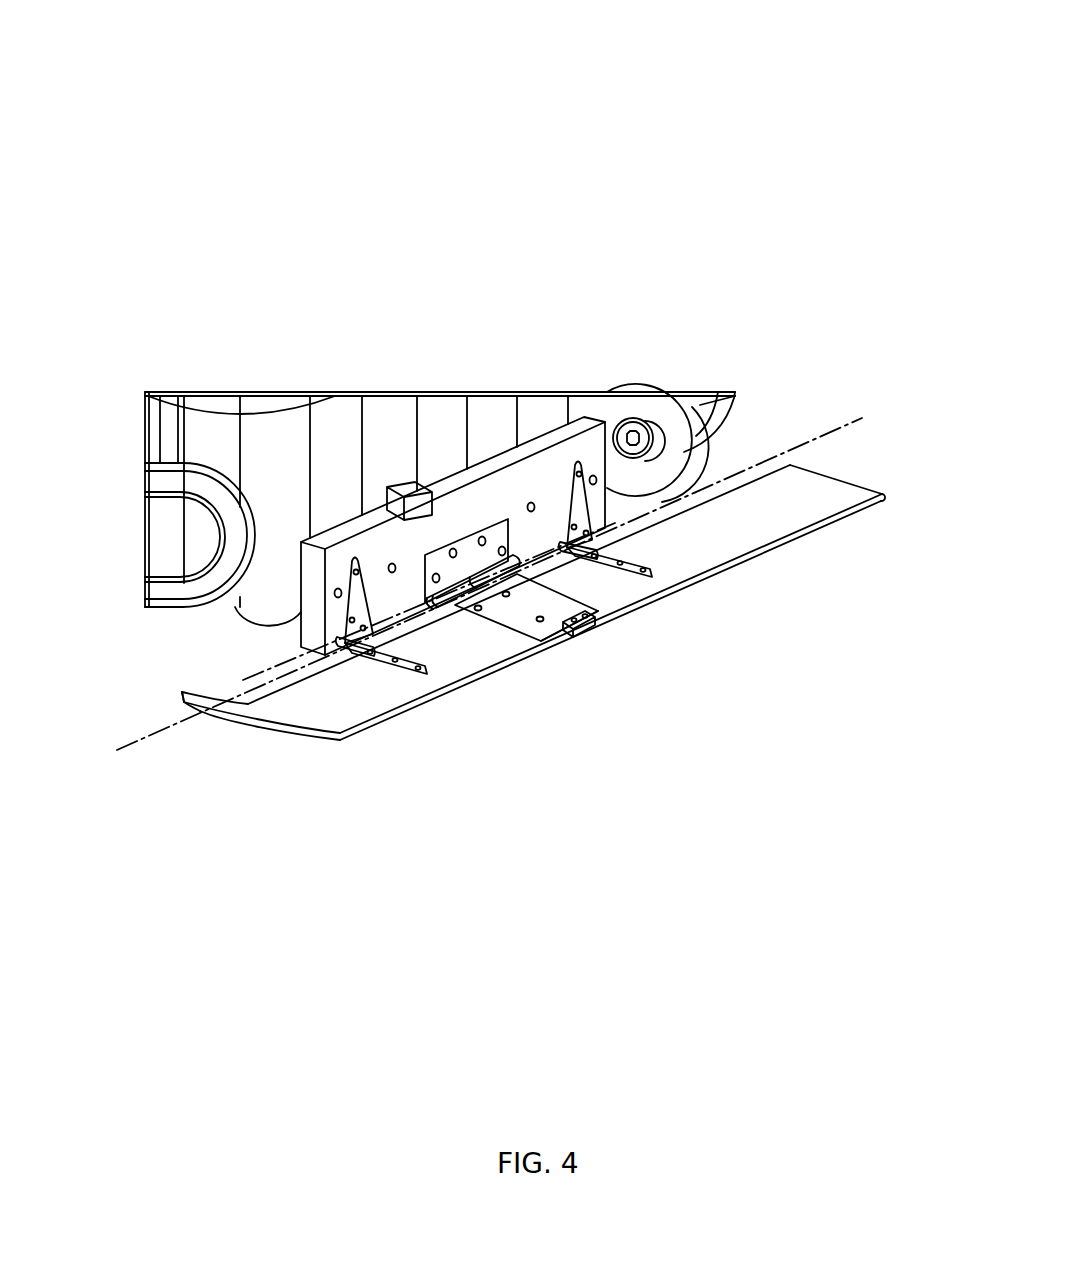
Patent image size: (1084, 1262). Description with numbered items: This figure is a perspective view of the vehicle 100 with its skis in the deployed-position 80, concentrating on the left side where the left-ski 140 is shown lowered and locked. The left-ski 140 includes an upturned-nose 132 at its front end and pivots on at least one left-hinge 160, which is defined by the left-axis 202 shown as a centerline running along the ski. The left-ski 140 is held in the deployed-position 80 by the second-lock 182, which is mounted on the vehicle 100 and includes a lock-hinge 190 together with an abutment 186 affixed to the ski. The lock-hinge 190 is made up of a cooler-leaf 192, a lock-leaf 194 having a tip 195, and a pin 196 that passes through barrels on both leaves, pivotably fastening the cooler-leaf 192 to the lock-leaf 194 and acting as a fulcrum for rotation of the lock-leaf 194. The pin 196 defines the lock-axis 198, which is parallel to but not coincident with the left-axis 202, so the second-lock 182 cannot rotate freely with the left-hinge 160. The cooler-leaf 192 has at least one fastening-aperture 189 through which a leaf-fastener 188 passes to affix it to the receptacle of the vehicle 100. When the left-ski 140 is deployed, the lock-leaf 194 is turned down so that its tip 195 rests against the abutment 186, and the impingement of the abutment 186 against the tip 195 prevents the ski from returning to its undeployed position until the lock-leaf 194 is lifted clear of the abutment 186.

The deployed-position 80 is at (872, 38).
The vehicle 100 is at (683, 256).
The upturned-nose 132 is at (216, 702).
The left-ski 140 is at (835, 477).
The left-hinge 160 is at (648, 571).
The second-lock 182 is at (522, 498).
The abutment 186 is at (552, 629).
The leaf-fastener 188 is at (485, 538).
The fastening-aperture 189 is at (430, 568).
The lock-hinge 190 is at (519, 574).
The cooler-leaf 192 is at (472, 537).
The lock-leaf 194 is at (506, 616).
The tip 195 is at (580, 623).
The pin 196 is at (431, 604).
The lock-axis 198 is at (262, 671).
The left-axis 202 is at (156, 737).